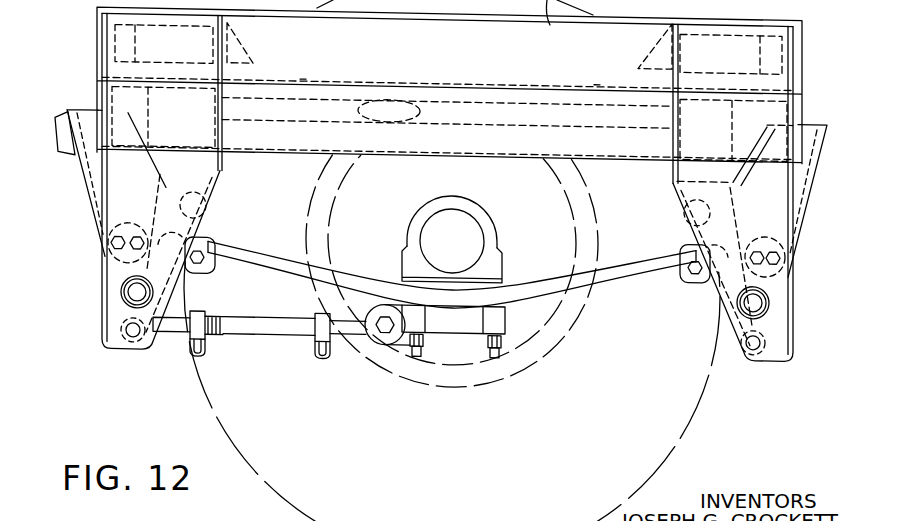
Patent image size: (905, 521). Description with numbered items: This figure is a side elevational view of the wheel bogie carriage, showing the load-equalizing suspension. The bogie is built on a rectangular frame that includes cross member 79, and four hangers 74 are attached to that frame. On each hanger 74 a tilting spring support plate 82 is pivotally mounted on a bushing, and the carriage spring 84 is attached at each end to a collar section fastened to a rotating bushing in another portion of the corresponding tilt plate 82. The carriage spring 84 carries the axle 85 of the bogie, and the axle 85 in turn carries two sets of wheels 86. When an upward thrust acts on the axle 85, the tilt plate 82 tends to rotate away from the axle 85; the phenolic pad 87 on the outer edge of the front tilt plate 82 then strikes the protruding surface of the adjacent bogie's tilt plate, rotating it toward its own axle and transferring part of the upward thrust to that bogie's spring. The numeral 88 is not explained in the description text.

The hanger 74 is at (110, 204).
The cross member 79 is at (76, 115).
The tilting spring support plate 82 is at (100, 175).
The carriage spring 84 is at (647, 263).
The axle 85 is at (470, 227).
The wheels 86 is at (286, 435).
The phenolic pad 87 is at (65, 154).
The tie rod 88 is at (266, 339).